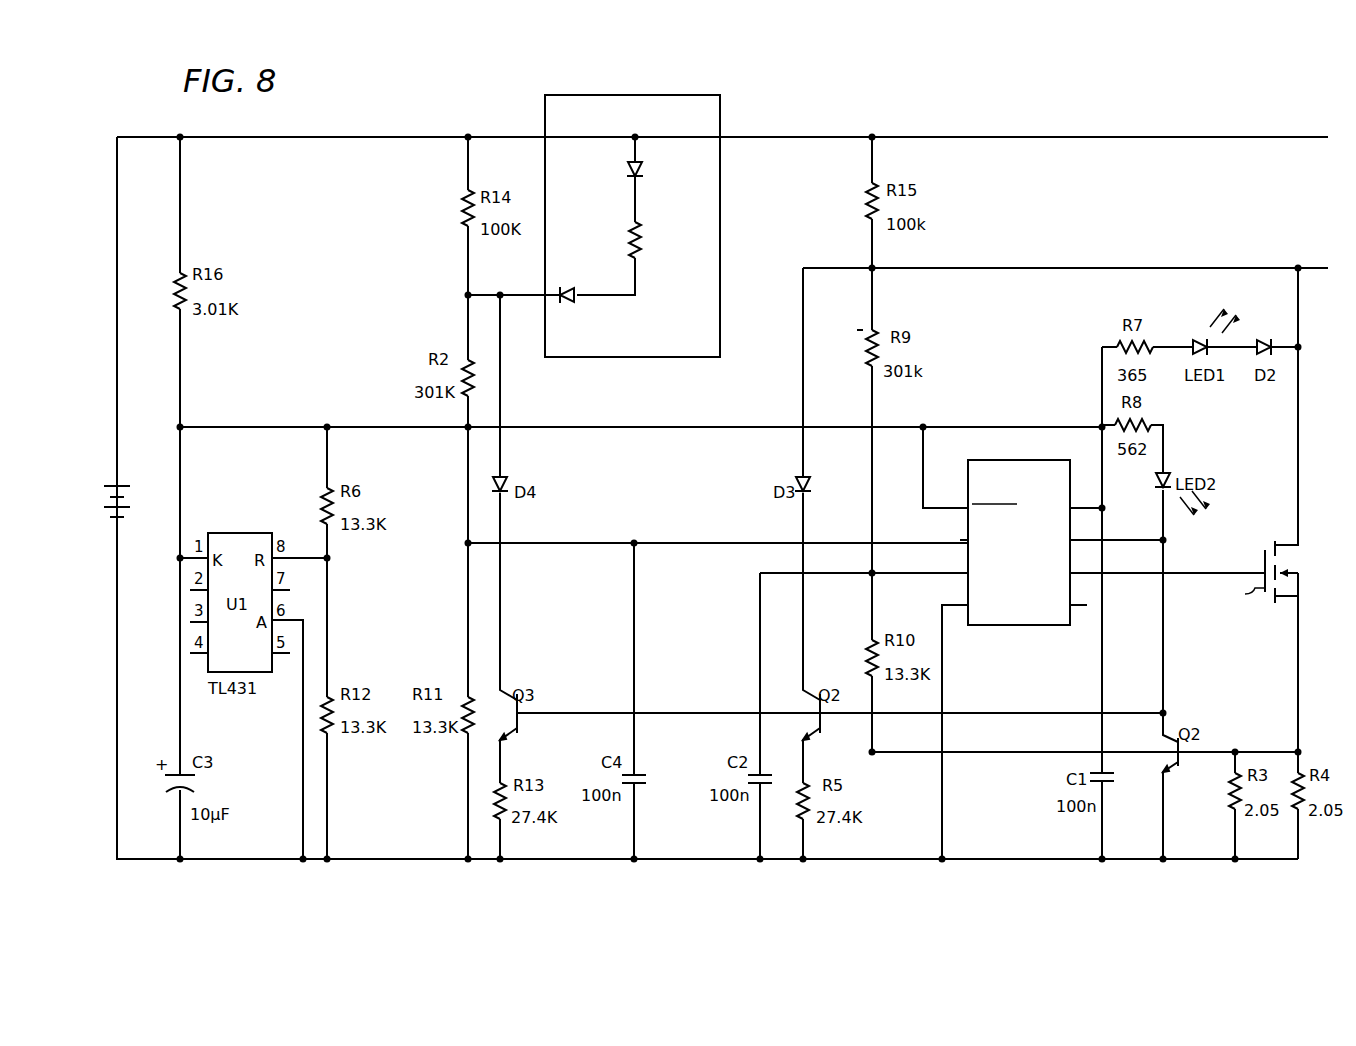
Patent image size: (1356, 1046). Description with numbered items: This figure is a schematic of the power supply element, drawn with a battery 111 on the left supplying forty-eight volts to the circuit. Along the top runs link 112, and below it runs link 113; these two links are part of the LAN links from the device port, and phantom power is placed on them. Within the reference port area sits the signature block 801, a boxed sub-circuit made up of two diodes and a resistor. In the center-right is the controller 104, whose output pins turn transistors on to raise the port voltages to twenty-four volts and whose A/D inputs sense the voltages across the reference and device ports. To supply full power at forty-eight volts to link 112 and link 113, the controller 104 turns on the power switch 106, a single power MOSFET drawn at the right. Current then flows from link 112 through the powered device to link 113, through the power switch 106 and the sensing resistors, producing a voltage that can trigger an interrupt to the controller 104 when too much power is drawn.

The signature block 801 is at (634, 95).
The link 112 is at (1319, 135).
The link 113 is at (1319, 266).
The battery 111 is at (126, 482).
The controller 104 is at (1030, 460).
The power switch 106 is at (1257, 510).